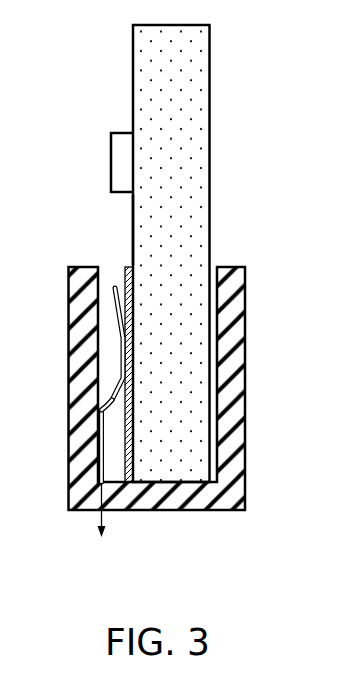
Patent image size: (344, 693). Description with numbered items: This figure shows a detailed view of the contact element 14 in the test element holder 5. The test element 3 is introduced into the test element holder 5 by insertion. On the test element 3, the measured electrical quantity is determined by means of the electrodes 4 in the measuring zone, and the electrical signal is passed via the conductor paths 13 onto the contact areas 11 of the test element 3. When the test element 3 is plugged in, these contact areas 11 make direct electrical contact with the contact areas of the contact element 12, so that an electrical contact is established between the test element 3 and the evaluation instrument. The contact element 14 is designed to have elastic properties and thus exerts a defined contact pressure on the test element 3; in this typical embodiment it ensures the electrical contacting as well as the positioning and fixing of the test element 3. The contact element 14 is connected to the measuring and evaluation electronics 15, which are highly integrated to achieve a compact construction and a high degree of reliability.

The test element 3 is at (200, 48).
The electrodes 4 is at (113, 160).
The test element holder 5 is at (245, 412).
The contact areas 11 is at (125, 268).
The contact areas of the contact element 12 is at (123, 352).
The conductor paths 13 is at (133, 222).
The contact element 14 is at (112, 400).
The measuring and evaluation electronics 15 is at (102, 525).